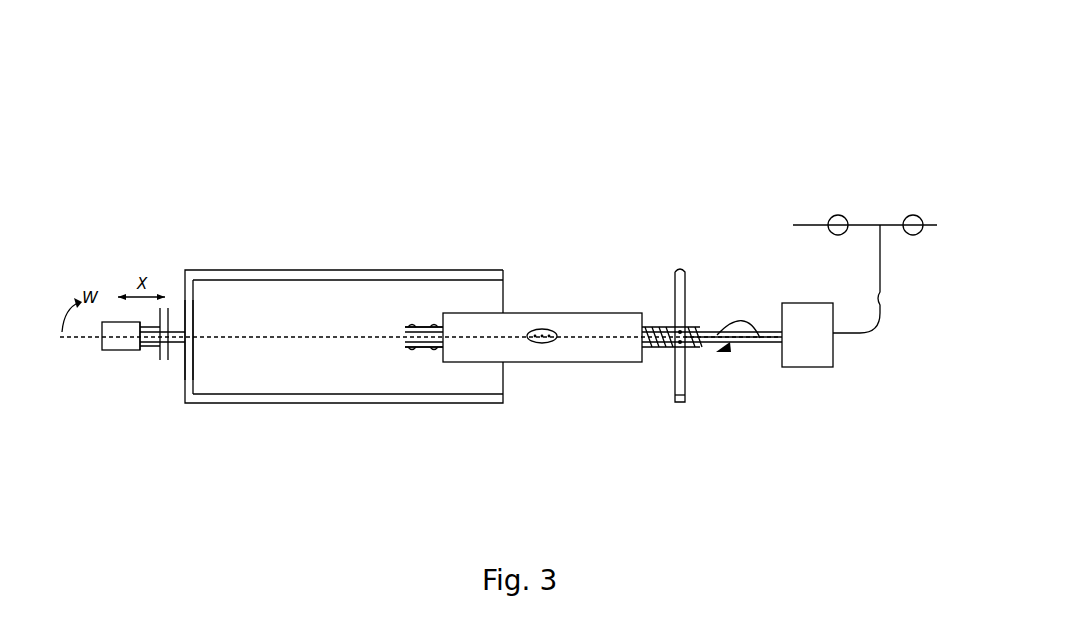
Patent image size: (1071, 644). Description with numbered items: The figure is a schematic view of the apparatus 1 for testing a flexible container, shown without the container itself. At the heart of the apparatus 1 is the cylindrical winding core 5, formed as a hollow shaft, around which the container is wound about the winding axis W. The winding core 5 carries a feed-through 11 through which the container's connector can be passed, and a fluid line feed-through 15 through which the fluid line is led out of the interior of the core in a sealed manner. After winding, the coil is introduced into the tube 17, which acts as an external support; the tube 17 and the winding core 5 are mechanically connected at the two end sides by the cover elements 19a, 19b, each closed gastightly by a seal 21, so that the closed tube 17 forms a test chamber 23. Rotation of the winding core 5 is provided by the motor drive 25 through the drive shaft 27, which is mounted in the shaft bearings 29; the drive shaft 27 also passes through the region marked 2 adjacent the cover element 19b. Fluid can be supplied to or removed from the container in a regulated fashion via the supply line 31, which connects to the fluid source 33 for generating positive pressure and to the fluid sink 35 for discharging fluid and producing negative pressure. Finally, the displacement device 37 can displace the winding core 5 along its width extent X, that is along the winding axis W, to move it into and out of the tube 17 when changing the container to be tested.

The apparatus 1 is at (382, 101).
The rotation direction 2 is at (759, 374).
The winding core 5 is at (403, 328).
The feed-through 11 is at (552, 330).
The fluid line feed-through 15 is at (680, 343).
The tube 17 is at (317, 273).
The cover element 19a is at (187, 375).
The cover element 19b is at (688, 277).
The seal 21 is at (672, 398).
The test chamber 23 is at (413, 348).
The motor drive 25 is at (807, 303).
The drive shaft 27 is at (757, 340).
The shaft bearings 29 is at (655, 347).
The supply line 31 is at (880, 317).
The fluid source 33 is at (827, 217).
The fluid sink 35 is at (903, 218).
The displacement device 37 is at (113, 353).